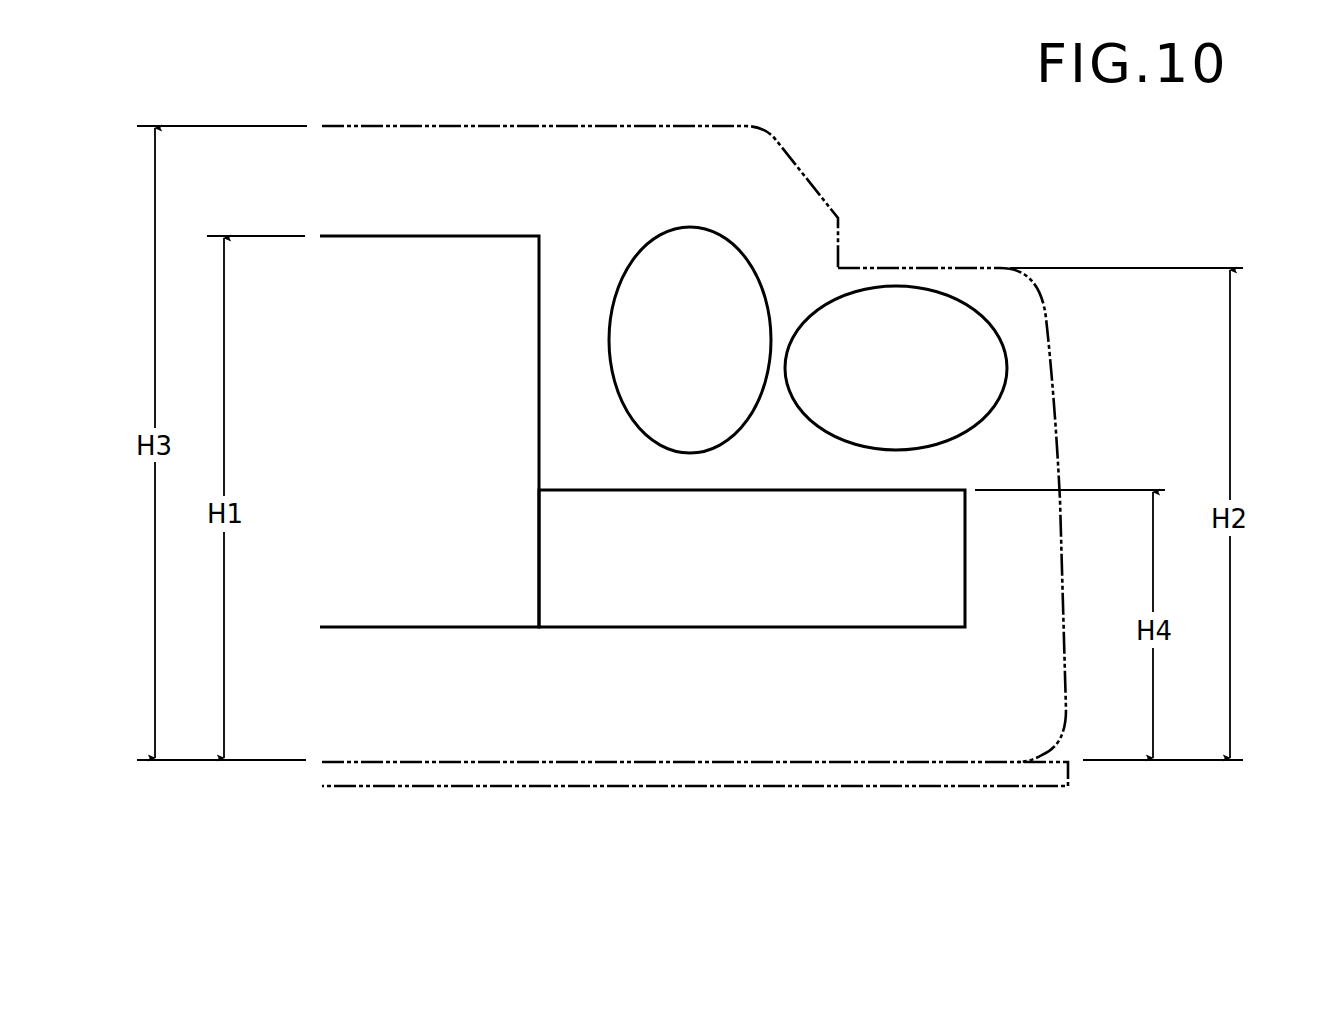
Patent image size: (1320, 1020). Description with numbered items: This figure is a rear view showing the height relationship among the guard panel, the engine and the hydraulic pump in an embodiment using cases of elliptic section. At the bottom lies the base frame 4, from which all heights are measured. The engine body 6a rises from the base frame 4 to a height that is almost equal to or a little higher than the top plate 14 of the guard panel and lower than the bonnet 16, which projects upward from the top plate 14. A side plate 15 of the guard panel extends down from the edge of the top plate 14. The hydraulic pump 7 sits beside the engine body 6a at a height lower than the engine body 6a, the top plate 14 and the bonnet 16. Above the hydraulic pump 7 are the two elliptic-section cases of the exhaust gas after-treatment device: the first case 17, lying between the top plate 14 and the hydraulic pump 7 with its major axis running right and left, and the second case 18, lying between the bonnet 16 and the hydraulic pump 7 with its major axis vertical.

The base frame 4 is at (1070, 774).
The engine body 6a is at (413, 598).
The hydraulic pump 7 is at (832, 596).
The top plate 14 is at (930, 268).
The side plate 15 is at (1063, 430).
The bonnet 16 is at (525, 122).
The oval member (23) 17 is at (985, 356).
The oval member (24) 18 is at (694, 250).